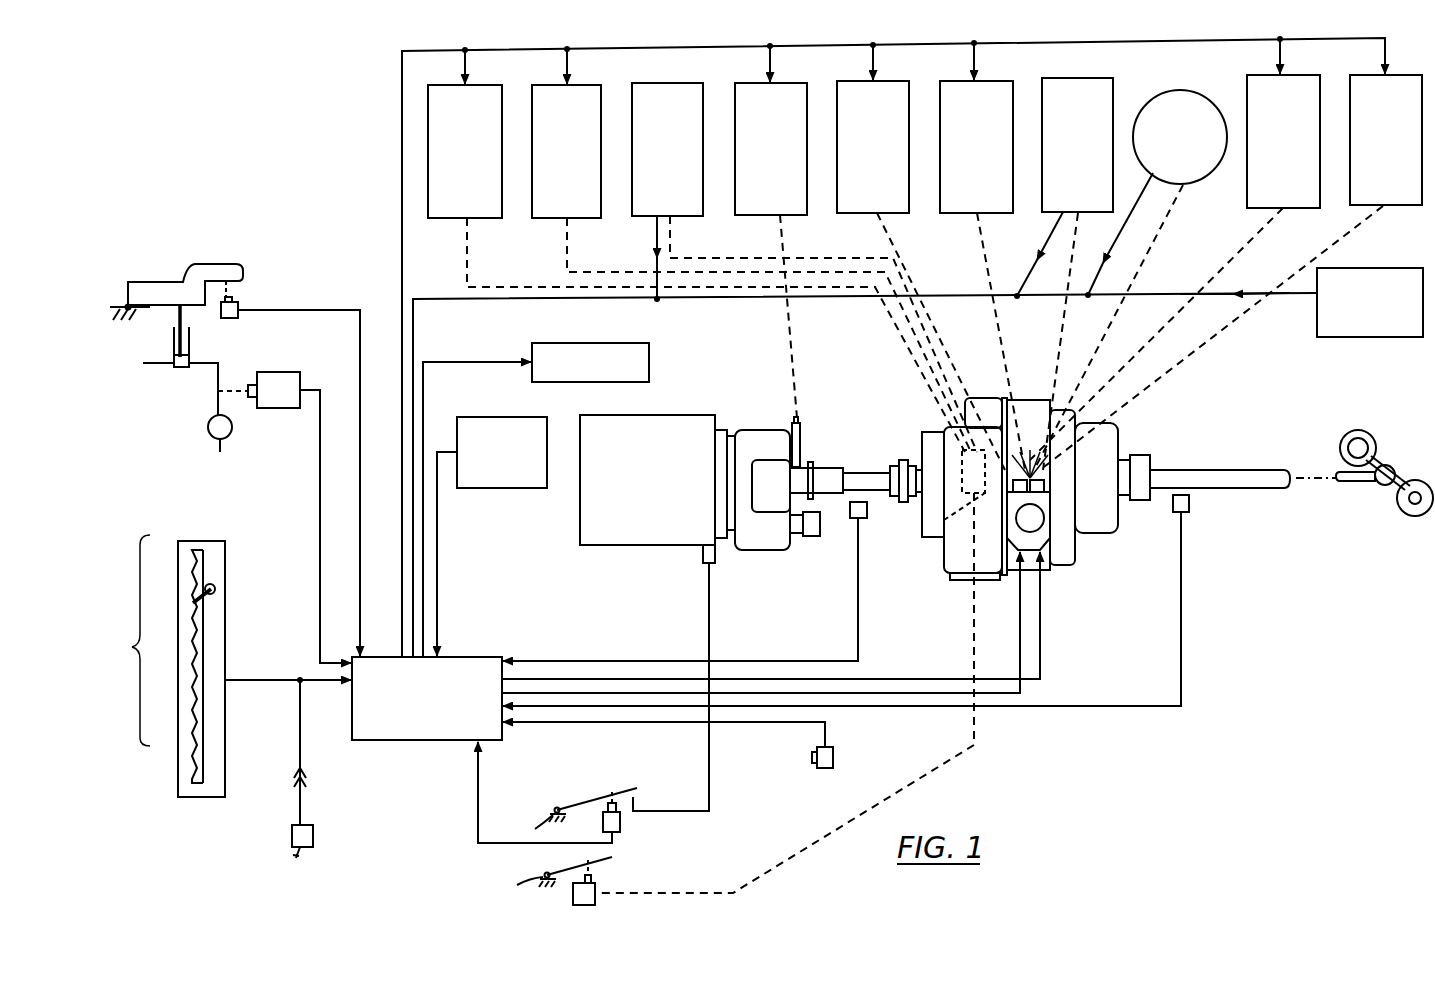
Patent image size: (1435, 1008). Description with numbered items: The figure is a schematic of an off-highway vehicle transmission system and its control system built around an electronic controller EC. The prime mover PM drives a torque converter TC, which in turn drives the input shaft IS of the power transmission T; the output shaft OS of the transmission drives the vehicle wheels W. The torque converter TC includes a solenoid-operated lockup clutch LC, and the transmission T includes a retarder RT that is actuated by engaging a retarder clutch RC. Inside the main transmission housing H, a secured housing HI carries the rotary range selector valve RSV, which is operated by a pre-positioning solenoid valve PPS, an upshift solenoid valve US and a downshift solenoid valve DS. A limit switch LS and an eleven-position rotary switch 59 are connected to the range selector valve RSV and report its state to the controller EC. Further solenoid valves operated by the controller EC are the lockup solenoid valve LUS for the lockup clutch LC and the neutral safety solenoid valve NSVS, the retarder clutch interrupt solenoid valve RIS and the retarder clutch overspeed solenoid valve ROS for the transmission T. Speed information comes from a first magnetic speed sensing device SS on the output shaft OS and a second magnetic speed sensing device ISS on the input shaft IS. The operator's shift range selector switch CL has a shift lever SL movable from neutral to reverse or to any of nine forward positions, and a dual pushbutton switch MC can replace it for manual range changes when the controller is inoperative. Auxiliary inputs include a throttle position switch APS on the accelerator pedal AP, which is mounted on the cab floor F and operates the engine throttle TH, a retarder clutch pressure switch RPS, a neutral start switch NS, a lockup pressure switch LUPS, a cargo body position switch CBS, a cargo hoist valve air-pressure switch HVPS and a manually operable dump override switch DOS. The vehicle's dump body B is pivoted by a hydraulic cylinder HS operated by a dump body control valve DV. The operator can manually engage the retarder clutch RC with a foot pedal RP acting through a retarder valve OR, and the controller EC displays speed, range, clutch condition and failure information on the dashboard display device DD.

The retarder clutch interrupt solenoid valve RIS is at (480, 85).
The retarder clutch overspeed solenoid valve ROS is at (584, 85).
The retarder clutch pressure switch RPS is at (688, 83).
The lockup solenoid valve LUS is at (797, 83).
The neutral safety solenoid valve NSVS is at (899, 81).
The downshift solenoid valve DS is at (1000, 80).
The limit switch LS is at (1091, 78).
The rotary switch 59 is at (1186, 90).
The pre-positioning solenoid valve PPS is at (1296, 75).
The upshift solenoid valve US is at (1402, 75).
The lockup pressure switch LUPS is at (1368, 268).
The dump body B is at (138, 282).
The cargo body position switch CBS is at (240, 308).
The hydraulic cylinder HS is at (174, 337).
The dump body control valve DV is at (208, 430).
The cargo hoist valve air-pressure switch HVPS is at (282, 362).
The display device DD is at (570, 327).
The neutral start switch NS is at (525, 488).
The prime mover PM is at (665, 415).
The throttle TH is at (703, 553).
The torque converter TC is at (767, 550).
The lockup clutch LC is at (801, 440).
The input shaft IS is at (860, 470).
The second magnetic type speed sensing device ISS is at (867, 511).
The power transmission T is at (1100, 545).
The main transmission housing H is at (1068, 562).
The housing HI is at (1047, 522).
The rotary range selector valve RSV is at (1040, 546).
The retarder RT is at (960, 450).
The retarder clutch RC is at (945, 520).
The output shaft OS is at (1225, 470).
The vehicle wheels W is at (1408, 480).
The first magnetic type speed sensing device SS is at (1190, 503).
The dump override switch DOS is at (833, 757).
The electronic controller EC is at (465, 657).
The shift range selector switch CL is at (229, 748).
The shift lever SL is at (215, 587).
The floor F is at (137, 663).
The dual pushbutton switch MC is at (313, 833).
The accelerator pedal AP is at (627, 789).
The throttle position switch APS is at (620, 826).
The foot pedal RP is at (612, 857).
The retarder valve OR is at (578, 905).